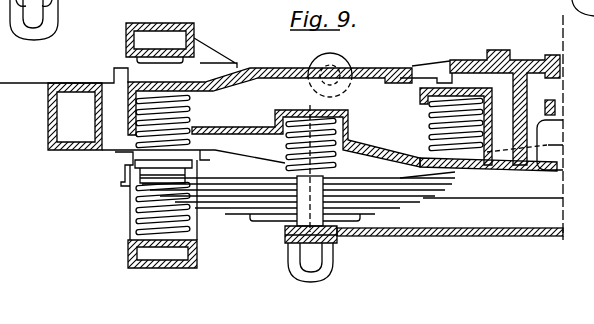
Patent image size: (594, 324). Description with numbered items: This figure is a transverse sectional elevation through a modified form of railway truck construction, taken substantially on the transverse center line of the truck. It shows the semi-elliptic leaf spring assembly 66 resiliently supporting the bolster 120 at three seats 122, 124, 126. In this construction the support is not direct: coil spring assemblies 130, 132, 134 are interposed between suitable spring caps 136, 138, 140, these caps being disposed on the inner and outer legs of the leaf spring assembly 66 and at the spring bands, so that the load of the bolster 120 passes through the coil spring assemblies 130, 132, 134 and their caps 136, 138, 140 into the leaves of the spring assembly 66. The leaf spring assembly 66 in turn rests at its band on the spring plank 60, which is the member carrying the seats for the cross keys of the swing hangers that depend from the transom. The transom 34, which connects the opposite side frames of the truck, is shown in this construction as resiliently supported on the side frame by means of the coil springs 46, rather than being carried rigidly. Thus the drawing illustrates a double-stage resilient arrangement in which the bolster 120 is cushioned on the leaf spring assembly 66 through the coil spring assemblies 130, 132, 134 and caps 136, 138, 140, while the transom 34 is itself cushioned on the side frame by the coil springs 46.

The spring plank 60 is at (60, 20).
The seat 122 is at (145, 83).
The bolster 120 is at (375, 72).
The seat 126 is at (300, 110).
The seat 124 is at (462, 88).
The coil spring assembly 134 is at (336, 126).
The transom 34 is at (110, 150).
The coil spring assembly 130 is at (125, 168).
The spring cap 136 is at (140, 190).
The coil spring 46 is at (136, 220).
The semi-elliptic spring assembly 66 is at (262, 203).
The spring cap 140 is at (332, 177).
The spring cap 138 is at (458, 165).
The coil spring assembly 132 is at (483, 168).